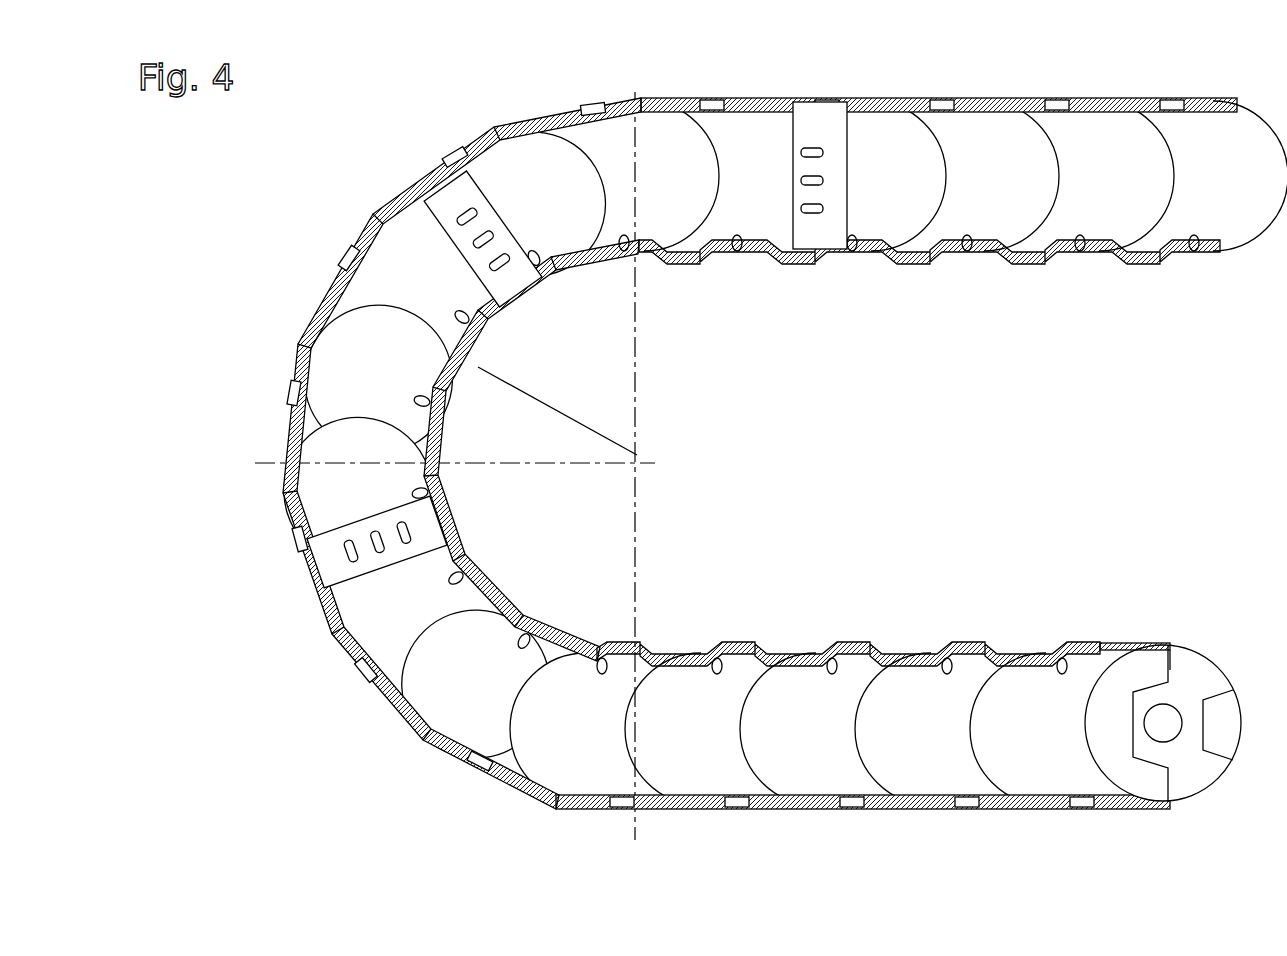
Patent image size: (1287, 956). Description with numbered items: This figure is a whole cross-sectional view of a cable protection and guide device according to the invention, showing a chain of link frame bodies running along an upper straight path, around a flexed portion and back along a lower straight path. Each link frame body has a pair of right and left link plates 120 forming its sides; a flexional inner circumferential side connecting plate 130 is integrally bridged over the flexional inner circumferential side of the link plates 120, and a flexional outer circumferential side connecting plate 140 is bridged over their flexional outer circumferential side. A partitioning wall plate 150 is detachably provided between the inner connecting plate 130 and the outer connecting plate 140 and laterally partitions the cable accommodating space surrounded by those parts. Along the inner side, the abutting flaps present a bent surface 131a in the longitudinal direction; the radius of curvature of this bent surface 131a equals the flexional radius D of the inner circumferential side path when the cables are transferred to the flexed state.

The link plate 120 is at (1248, 227).
The flexional inner circumferential side connecting plate 130 is at (672, 262).
The bent surface 131a is at (570, 280).
The flexional outer circumferential side connecting plate 140 is at (606, 104).
The partitioning wall plate 150 is at (822, 130).
The flexional radius D is at (557, 411).